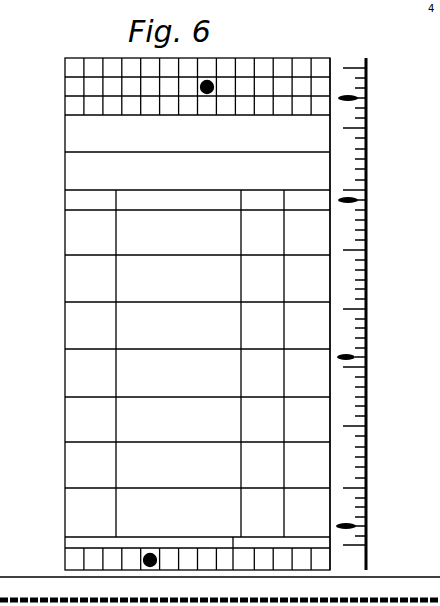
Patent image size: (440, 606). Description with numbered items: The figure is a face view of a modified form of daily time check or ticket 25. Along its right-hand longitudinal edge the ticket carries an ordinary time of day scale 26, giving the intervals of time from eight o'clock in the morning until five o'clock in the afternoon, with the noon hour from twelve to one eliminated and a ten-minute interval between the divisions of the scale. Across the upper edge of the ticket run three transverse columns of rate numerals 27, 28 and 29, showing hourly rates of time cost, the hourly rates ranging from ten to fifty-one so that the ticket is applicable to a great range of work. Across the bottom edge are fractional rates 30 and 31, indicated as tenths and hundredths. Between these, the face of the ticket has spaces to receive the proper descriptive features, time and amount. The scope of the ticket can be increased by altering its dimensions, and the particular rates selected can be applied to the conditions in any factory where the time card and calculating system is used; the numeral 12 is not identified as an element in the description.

The daily time check or ticket 25 is at (62, 244).
The time of day scale 26 is at (368, 208).
The column of rate numerals 27 is at (65, 68).
The column of rate numerals 28 is at (65, 83).
The column of rate numerals 29 is at (65, 106).
The fractional rates 30 is at (65, 548).
The fractional rates 31 is at (330, 567).
The record strip 12 is at (416, 586).